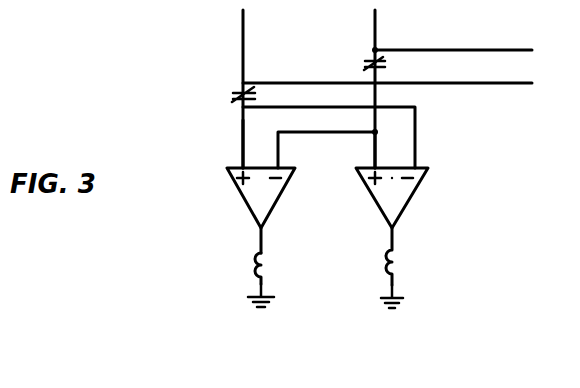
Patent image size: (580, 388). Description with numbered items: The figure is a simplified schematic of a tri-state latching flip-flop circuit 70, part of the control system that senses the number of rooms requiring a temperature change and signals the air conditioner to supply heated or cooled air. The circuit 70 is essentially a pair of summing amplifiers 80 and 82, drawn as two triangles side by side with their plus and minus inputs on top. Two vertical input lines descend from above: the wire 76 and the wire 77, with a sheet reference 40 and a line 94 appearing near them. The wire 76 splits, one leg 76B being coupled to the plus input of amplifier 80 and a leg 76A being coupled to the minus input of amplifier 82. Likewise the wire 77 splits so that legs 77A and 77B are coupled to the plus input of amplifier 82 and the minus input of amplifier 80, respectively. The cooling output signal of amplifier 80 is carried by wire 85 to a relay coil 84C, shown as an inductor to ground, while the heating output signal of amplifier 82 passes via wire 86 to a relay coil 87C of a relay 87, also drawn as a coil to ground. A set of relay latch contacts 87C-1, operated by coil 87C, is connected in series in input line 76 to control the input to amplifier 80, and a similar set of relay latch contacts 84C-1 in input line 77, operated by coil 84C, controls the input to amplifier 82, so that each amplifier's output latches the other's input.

The bracket reference 40 is at (58, 4).
The wire 76 is at (243, 21).
The wire 77 is at (375, 26).
The wire 86 is at (495, 50).
The relay latch contacts 84C-1 is at (385, 64).
The bias line 94 is at (472, 86).
The relay latch contacts 87C-1 is at (236, 96).
The leg 76B is at (264, 107).
The leg 76A is at (243, 142).
The leg 77B is at (341, 133).
The leg 77A is at (375, 150).
The summing amplifier 80 is at (241, 197).
The wire 85 is at (258, 236).
The relay coil 84C is at (254, 276).
The summing amplifier 82 is at (398, 199).
The relay 87 is at (397, 268).
The relay coil 87C is at (386, 279).
The tri-state latching flip-flop circuit 70 is at (458, 178).